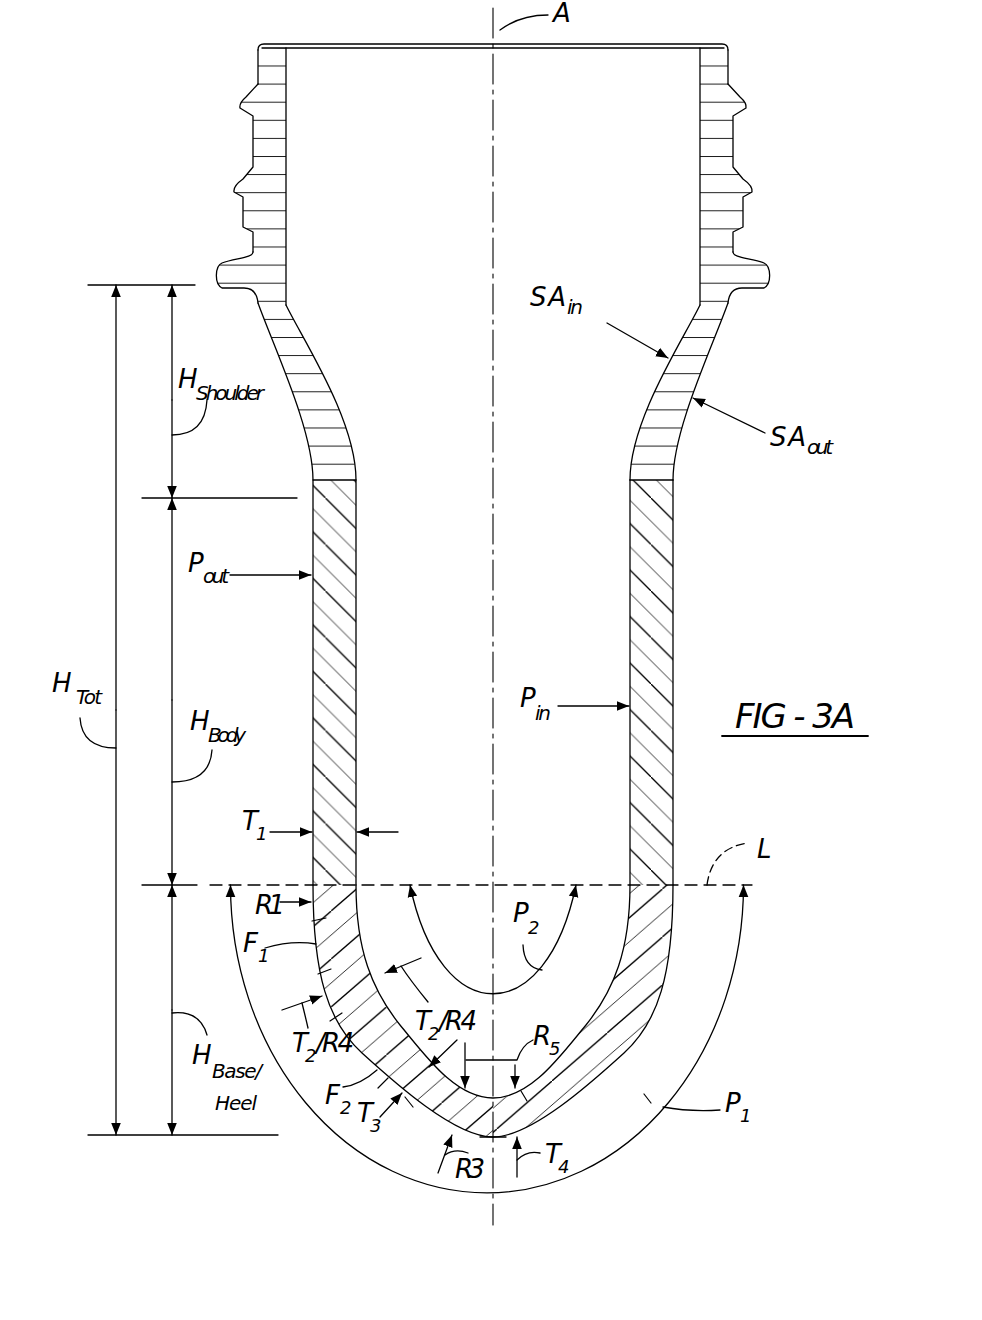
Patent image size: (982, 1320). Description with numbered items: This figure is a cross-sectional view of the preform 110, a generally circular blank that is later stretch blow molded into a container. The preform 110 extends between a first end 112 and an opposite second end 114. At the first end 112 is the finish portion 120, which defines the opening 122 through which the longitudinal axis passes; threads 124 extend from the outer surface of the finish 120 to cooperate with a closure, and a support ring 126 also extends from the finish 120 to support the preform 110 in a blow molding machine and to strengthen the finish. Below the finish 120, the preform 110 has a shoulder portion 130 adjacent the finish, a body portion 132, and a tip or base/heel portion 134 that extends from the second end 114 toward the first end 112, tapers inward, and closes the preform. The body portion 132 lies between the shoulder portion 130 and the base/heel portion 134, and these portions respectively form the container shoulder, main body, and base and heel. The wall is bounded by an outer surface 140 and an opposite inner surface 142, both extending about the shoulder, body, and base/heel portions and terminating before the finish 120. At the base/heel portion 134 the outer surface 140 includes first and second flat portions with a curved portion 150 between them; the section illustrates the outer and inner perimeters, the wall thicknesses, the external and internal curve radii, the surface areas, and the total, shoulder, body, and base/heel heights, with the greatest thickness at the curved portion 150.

The preform 110 is at (135, 112).
The first end 112 is at (262, 45).
The second end 114 is at (497, 1137).
The finish portion 120 is at (272, 58).
The opening 122 is at (693, 60).
The threads 124 is at (748, 108).
The support ring 126 is at (768, 272).
The shoulder portion 130 is at (318, 415).
The body portion 132 is at (313, 708).
The base/heel portion 134 is at (435, 1100).
The outer surface 140 is at (675, 606).
The inner surface 142 is at (632, 560).
The curved portion 150 is at (324, 980).